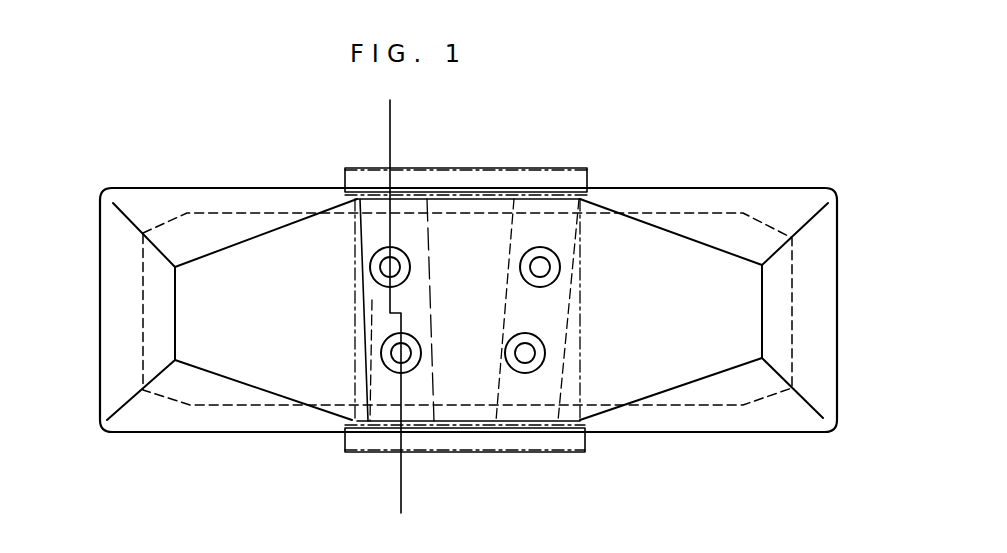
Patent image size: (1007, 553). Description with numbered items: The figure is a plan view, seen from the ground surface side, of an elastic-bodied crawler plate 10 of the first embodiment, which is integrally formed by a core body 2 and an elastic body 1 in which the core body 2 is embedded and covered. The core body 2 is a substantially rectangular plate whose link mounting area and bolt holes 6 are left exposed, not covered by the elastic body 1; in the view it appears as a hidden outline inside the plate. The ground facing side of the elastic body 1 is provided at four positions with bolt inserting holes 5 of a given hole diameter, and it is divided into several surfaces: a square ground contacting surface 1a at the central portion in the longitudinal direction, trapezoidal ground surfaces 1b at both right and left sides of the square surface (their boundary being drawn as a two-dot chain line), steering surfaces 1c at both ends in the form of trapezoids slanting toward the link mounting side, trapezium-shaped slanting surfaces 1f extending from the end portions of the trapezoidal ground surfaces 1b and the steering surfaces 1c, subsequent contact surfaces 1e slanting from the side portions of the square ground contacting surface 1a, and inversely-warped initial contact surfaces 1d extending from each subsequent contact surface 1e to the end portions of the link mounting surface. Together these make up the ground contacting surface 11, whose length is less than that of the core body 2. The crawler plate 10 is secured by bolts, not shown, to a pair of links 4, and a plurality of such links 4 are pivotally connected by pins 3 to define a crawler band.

The elastic body 1 is at (823, 260).
The square ground contacting surface 1a is at (463, 395).
The trapezoidal ground surface 1b is at (270, 372).
The steering surface 1c is at (113, 293).
The inversely-warped initial contact surface 1d is at (453, 188).
The subsequent contact surface 1e is at (527, 190).
The slanting surface 1f is at (152, 197).
The core body 2 is at (790, 357).
The pin 3 is at (386, 130).
The link 4 is at (373, 307).
The bolt inserting hole 5 is at (522, 258).
The bolt hole 6 is at (530, 270).
The elastic-bodied crawler plate 10 is at (813, 178).
The ground contacting surface 11 is at (247, 323).